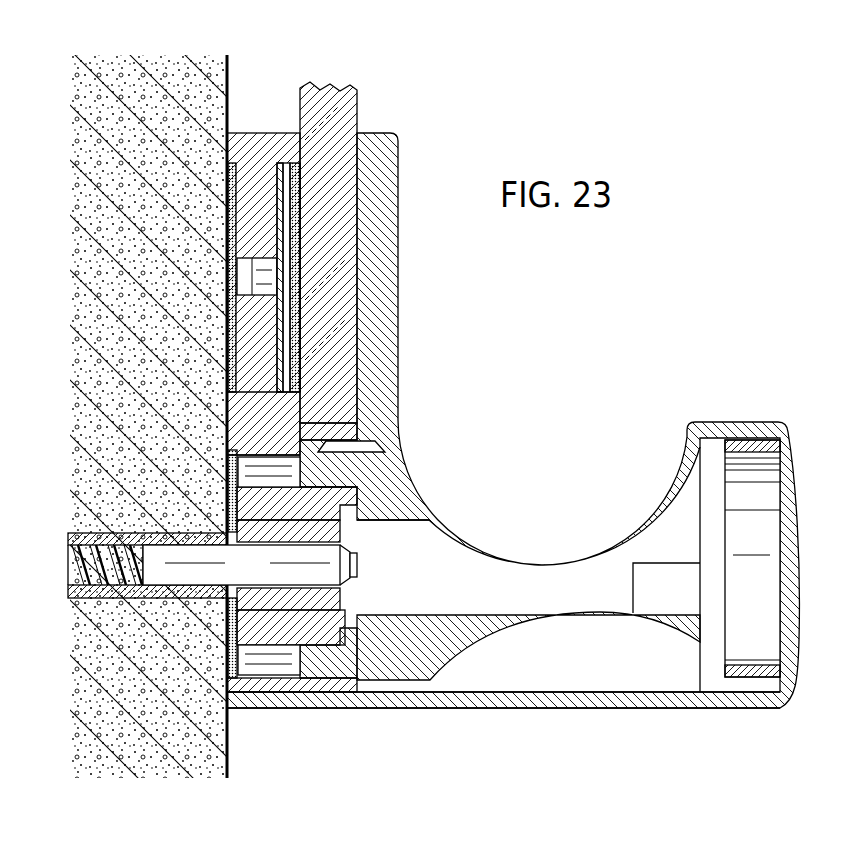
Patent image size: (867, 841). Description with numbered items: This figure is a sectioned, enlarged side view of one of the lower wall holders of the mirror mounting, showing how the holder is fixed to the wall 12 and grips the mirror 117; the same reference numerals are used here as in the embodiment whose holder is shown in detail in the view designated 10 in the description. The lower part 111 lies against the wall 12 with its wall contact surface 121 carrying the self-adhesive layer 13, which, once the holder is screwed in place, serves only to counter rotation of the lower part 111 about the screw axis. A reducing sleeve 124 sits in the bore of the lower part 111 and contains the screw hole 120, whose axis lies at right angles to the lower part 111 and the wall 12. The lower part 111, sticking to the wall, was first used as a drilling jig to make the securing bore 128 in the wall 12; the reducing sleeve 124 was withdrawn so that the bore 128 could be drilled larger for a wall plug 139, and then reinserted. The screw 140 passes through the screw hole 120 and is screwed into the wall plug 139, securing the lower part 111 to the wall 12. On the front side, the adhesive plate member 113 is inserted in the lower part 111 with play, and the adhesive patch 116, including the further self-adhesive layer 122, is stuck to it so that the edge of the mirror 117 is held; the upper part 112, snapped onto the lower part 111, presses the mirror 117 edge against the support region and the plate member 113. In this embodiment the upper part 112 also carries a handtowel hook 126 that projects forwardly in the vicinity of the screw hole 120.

The wall 12 is at (145, 74).
The mirror 117 is at (336, 95).
The adhesive plate member 113 is at (275, 173).
The gasket strip 10 is at (297, 161).
The self-adhesive layer 13 is at (226, 213).
The further self-adhesive layer 122 is at (298, 216).
The upper part 112 is at (403, 345).
The wall contact surface 121 is at (226, 400).
The lower part 111 is at (226, 430).
The wall plug 139 is at (160, 532).
The securing bore 128 is at (80, 600).
The screw hole 120 is at (268, 585).
The screw 140 is at (168, 577).
The adhesive patch 116 is at (226, 665).
The reducing sleeve 124 is at (282, 612).
The handtowel hook 126 is at (583, 709).